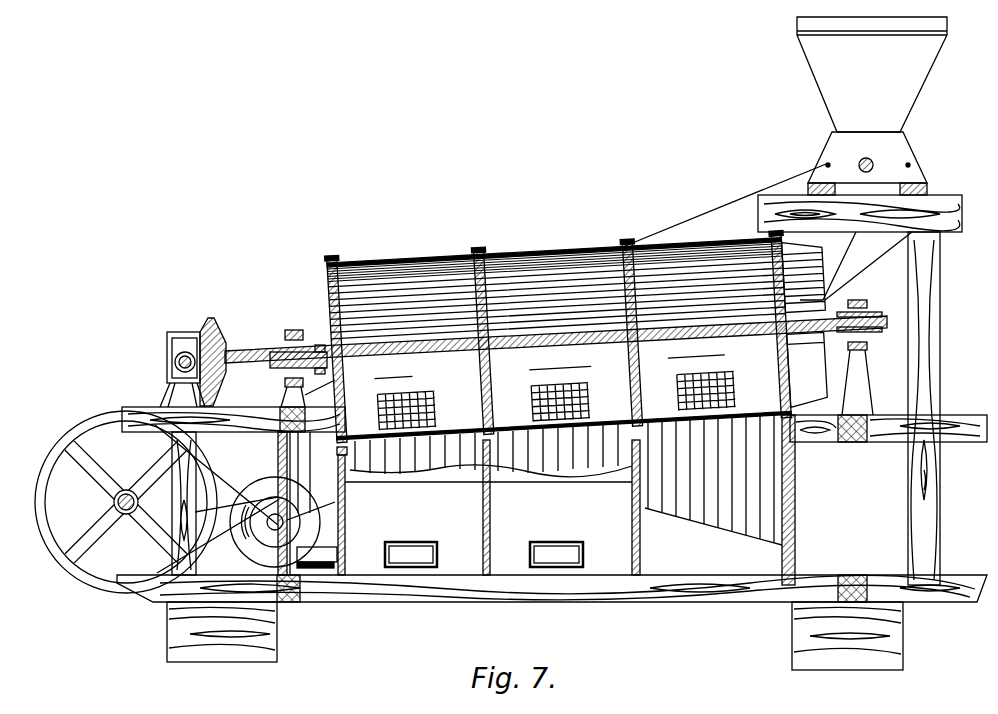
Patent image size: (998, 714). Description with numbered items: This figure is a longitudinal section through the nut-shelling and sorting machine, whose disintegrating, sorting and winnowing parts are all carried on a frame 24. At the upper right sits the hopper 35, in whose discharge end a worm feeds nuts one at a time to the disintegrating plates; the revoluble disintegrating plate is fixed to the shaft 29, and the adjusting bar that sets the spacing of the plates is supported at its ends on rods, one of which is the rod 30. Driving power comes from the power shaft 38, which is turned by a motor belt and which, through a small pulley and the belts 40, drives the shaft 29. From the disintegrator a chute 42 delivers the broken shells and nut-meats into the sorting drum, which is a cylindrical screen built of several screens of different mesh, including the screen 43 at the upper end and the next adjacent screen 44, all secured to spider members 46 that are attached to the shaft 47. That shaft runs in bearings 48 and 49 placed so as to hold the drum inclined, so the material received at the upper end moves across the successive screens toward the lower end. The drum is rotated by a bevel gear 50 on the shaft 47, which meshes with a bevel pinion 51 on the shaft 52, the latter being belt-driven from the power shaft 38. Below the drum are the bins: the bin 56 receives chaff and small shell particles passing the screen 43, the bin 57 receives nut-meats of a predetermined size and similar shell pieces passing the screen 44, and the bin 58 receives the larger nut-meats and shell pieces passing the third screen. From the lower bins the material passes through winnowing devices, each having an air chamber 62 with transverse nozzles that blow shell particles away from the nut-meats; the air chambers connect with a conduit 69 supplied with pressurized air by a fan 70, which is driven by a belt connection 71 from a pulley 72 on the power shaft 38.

The frame 24 is at (140, 410).
The shaft 29 is at (862, 162).
The rod 30 is at (910, 166).
The hopper 35 is at (828, 60).
The power shaft 38 is at (113, 502).
The belts 40 is at (763, 184).
The chute 42 is at (862, 272).
The screen 43 is at (420, 264).
The screen 44 is at (570, 252).
The spider members 46 is at (330, 260).
The shaft 47 is at (253, 352).
The bearing 48 is at (288, 345).
The bearing 49 is at (868, 308).
The bevel gear 50 is at (206, 320).
The bevel pinion 51 is at (826, 164).
The shaft 52 is at (182, 360).
The bin 56 is at (690, 515).
The bin 57 is at (510, 455).
The bin 58 is at (447, 455).
The air chamber 62 is at (409, 557).
The conduit 69 is at (318, 470).
The fan 70 is at (257, 487).
The belt connection 71 is at (203, 462).
The pulley 72 is at (96, 422).